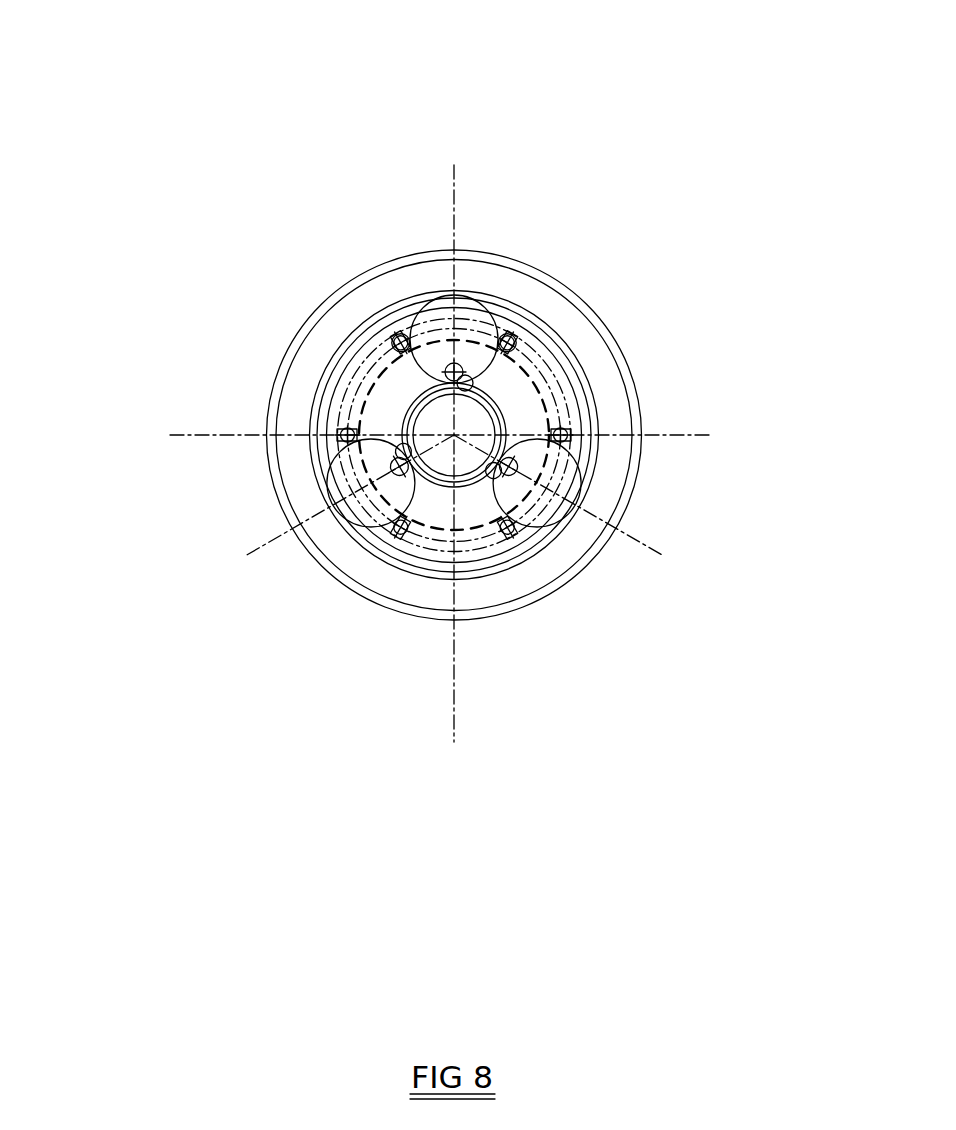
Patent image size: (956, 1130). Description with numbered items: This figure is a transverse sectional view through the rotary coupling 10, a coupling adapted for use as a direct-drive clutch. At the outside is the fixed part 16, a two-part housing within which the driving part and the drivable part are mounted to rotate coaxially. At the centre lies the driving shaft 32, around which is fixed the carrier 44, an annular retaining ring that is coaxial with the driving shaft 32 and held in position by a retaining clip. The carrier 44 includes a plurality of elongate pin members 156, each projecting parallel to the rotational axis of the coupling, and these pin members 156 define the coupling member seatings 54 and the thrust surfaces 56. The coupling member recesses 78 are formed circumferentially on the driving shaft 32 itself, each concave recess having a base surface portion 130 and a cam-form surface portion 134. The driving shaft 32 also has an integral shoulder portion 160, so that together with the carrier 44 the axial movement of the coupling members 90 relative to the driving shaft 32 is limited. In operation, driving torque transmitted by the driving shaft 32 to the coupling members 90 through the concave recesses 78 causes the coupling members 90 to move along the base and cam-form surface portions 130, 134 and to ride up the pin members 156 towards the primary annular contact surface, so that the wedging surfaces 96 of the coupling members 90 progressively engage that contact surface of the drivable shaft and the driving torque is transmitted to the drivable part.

The rotary coupling 10 is at (690, 252).
The fixed part 16 is at (560, 594).
The driving shaft 32 is at (463, 465).
The carrier 44 is at (395, 350).
The coupling member seatings 54 is at (407, 335).
The thrust surfaces 56 is at (500, 330).
The coupling member recesses 78 is at (535, 437).
The coupling members 90 is at (373, 513).
The wedging surfaces 96 is at (357, 460).
The base surface portion 130 is at (431, 335).
The cam-form surface portion 134 is at (486, 373).
The pin members 156 is at (522, 335).
The shoulder portion 160 is at (387, 407).